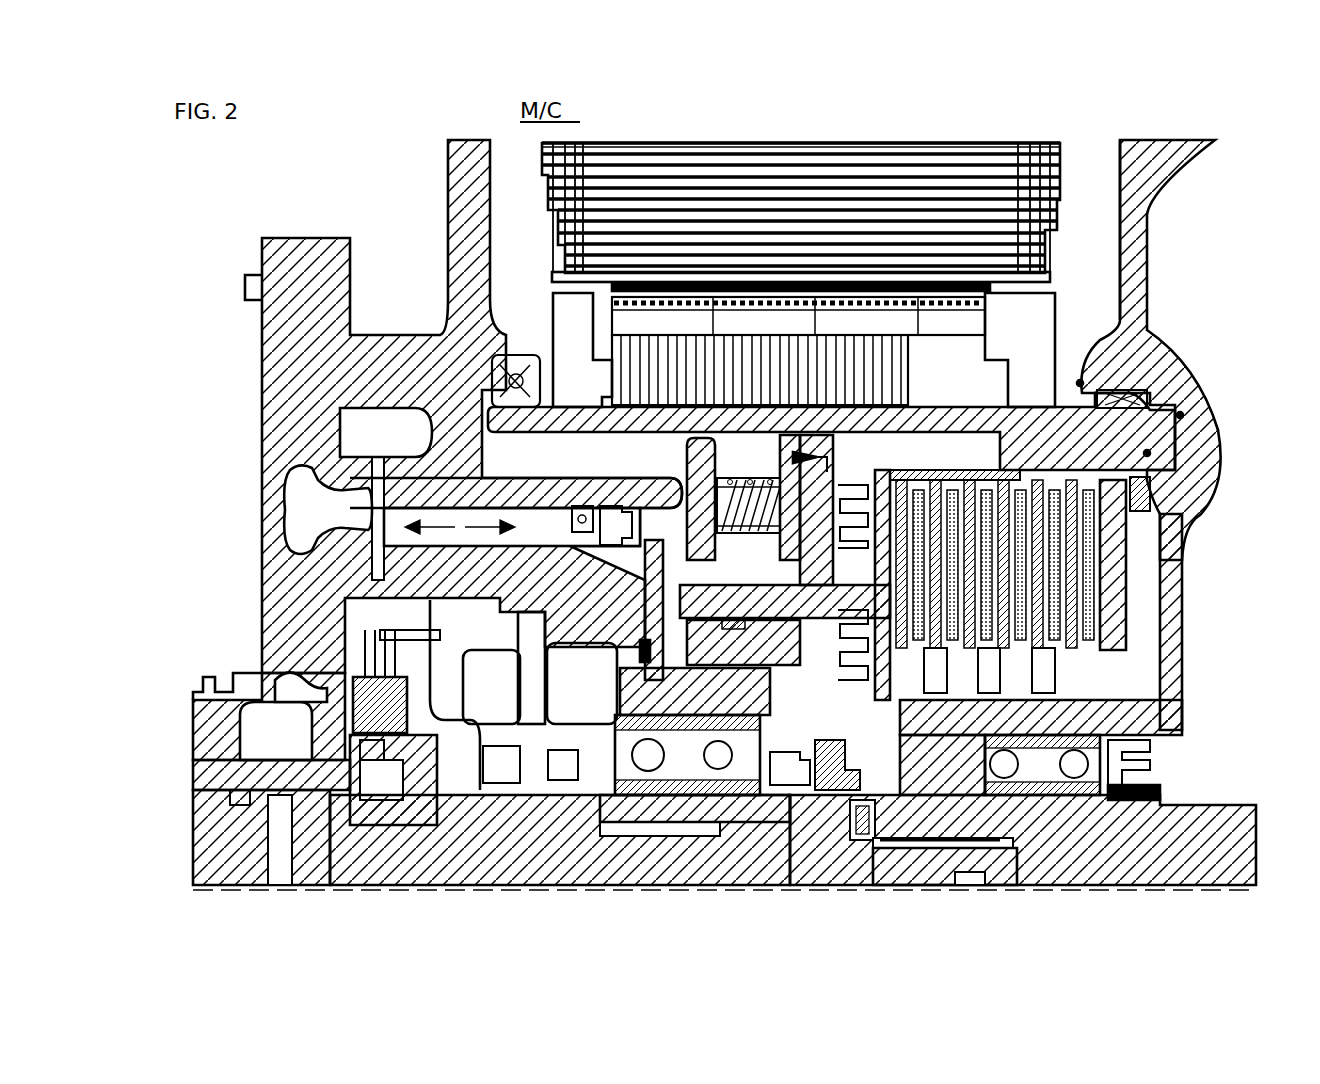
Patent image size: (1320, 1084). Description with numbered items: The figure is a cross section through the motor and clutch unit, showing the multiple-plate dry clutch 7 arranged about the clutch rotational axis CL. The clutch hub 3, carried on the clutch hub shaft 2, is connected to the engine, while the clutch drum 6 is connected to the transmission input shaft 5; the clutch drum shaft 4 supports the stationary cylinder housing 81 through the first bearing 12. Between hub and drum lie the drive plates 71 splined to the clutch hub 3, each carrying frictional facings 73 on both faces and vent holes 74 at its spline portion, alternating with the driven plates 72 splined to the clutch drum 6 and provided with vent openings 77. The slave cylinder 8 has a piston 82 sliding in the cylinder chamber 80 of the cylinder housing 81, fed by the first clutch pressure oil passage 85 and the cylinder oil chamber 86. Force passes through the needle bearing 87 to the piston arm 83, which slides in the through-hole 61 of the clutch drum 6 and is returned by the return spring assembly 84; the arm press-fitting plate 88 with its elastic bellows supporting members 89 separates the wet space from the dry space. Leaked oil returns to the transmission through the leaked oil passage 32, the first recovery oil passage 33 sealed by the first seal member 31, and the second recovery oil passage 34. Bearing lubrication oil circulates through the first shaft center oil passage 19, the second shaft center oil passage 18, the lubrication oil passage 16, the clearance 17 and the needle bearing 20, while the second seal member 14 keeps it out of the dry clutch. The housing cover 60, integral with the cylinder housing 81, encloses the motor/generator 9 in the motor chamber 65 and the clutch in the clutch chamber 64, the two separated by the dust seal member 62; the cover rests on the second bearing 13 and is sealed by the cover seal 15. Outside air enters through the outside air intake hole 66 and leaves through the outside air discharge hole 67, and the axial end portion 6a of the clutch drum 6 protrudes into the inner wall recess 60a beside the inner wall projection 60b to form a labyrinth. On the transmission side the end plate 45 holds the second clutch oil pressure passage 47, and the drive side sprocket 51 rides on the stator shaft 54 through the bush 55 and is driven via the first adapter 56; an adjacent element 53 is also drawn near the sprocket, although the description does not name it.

The clutch hub shaft 2 is at (1140, 858).
The clutch hub 3 is at (1093, 771).
The clutch drum shaft 4 is at (690, 812).
The transmission input shaft 5 is at (518, 848).
The clutch drum 6 is at (1092, 393).
The axial end portion 6a is at (1150, 453).
The multiple-plate dry clutch 7 is at (1101, 586).
The slave cylinder 8 is at (465, 630).
The motor/generator 9 is at (1000, 78).
The first bearing 12 is at (610, 750).
The second bearing 13 is at (1150, 762).
The second seal member 14 is at (830, 792).
The cover seal 15 is at (1160, 790).
The lubrication oil passage 16 is at (773, 790).
The clearance 17 is at (905, 850).
The second shaft center oil passage 18 is at (962, 882).
The first shaft center oil passage 19 is at (427, 888).
The needle bearing 20 is at (862, 842).
The first seal member 31 is at (520, 352).
The leaked oil passage 32 is at (755, 433).
The first recovery oil passage 33 is at (450, 440).
The second recovery oil passage 34 is at (1160, 420).
The end plate 45 is at (305, 360).
The second clutch oil pressure passage 47 is at (290, 538).
The drive side sprocket 51 is at (330, 705).
The pump piston 53 is at (380, 635).
The stator shaft 54 is at (240, 775).
The bush 55 is at (370, 786).
The first adapter 56 is at (410, 800).
The housing cover 60 is at (1138, 358).
The inner wall recess 60a is at (1170, 483).
The inner wall projection 60b is at (1082, 383).
The through-hole 61 is at (765, 635).
The dust seal member 62 is at (1112, 394).
The clutch chamber 64 is at (1143, 640).
The motor chamber 65 is at (1078, 252).
The outside air intake hole 66 is at (1165, 669).
The outside air discharge hole 67 is at (1182, 415).
The drive plate 71 is at (1097, 615).
The driven plate 72 is at (1056, 557).
The frictional facing 73 is at (1071, 579).
The vent hole 74 is at (1091, 672).
The vent opening 77 is at (1040, 482).
The cylinder chamber 80 is at (660, 490).
The cylinder housing 81 is at (416, 590).
The piston 82 is at (640, 650).
The piston arm 83 is at (712, 602).
The return spring assembly 84 is at (748, 476).
The first clutch pressure oil passage 85 is at (475, 555).
The cylinder oil chamber 86 is at (584, 512).
The needle bearing 87 is at (605, 515).
The arm press-fitting plate 88 is at (870, 622).
The elastic bellows supporting member 89 is at (818, 455).
The clutch rotational axis CL is at (1050, 888).